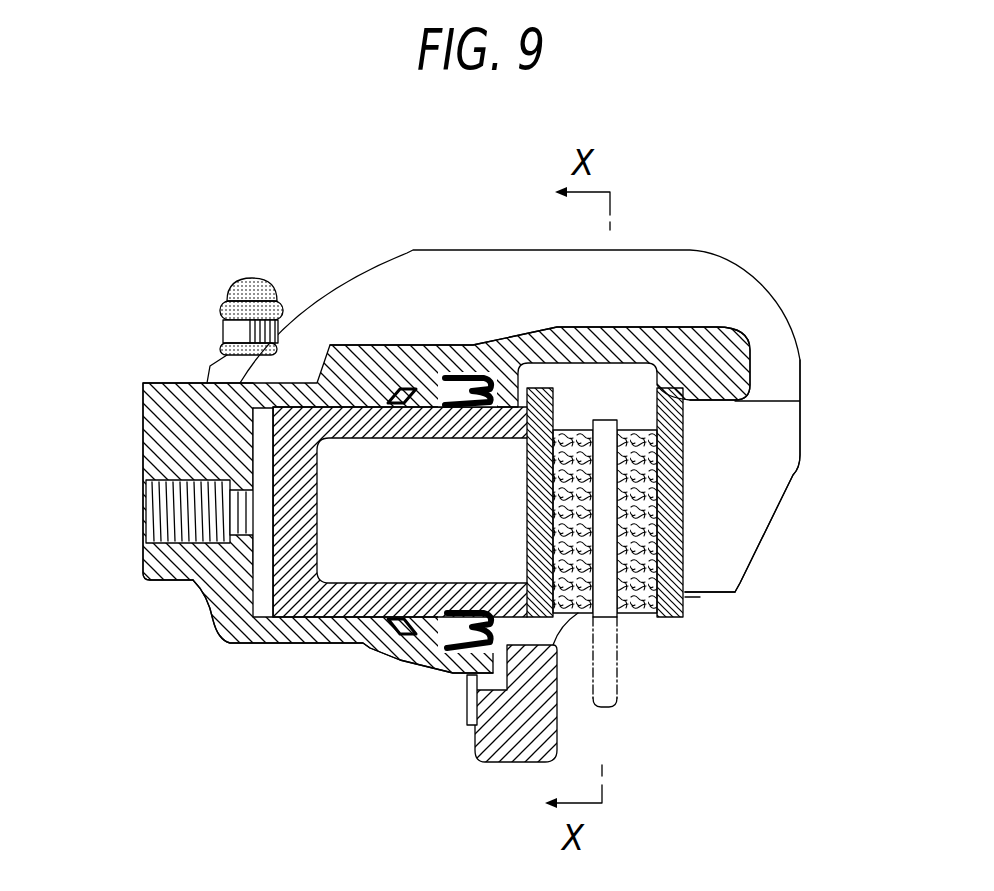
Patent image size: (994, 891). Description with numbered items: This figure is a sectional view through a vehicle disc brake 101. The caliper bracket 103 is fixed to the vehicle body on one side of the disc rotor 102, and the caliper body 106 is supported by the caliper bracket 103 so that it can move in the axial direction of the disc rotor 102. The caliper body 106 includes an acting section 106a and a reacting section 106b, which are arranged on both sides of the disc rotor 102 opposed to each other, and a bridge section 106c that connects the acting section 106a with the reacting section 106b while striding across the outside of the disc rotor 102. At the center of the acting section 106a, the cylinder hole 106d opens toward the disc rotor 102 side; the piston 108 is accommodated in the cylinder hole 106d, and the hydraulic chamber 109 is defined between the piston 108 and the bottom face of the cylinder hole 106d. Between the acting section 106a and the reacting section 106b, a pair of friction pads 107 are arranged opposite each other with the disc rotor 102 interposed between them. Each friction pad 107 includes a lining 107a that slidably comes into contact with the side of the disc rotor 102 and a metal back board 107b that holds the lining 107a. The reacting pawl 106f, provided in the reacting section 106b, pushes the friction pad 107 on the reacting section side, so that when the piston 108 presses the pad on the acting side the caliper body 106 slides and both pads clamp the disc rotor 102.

The disc brake 101 is at (742, 185).
The disc rotor 102 is at (607, 710).
The caliper bracket 103 is at (497, 710).
The caliper body 106 is at (408, 228).
The acting section 106a is at (160, 431).
The reacting section 106b is at (782, 426).
The bridge section 106c is at (620, 264).
The cylinder hole 106d is at (333, 615).
The reacting pawl 106f is at (728, 568).
The friction pad 107 is at (562, 568).
The lining 107a is at (553, 470).
The back board 107b is at (540, 520).
The piston 108 is at (372, 425).
The hydraulic chamber 109 is at (265, 600).